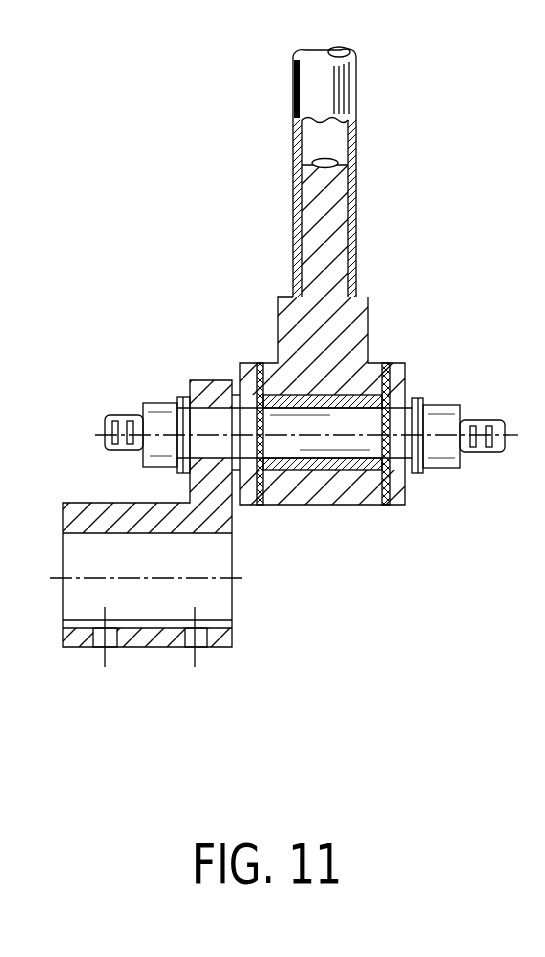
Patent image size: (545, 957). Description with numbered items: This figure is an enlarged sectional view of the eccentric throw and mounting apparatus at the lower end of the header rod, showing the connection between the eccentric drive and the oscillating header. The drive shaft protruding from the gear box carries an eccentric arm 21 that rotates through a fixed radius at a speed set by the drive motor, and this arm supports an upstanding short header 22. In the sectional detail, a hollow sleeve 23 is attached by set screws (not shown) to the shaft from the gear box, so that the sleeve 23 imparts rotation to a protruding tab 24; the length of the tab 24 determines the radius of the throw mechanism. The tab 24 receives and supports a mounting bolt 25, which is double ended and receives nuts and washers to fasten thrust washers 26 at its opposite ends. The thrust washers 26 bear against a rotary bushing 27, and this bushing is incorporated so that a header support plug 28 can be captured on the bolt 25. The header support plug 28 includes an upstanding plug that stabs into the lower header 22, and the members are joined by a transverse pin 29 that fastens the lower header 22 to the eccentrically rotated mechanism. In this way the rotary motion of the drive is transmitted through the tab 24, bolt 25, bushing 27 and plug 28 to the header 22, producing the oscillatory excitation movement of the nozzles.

The eccentric arm 21 is at (143, 403).
The short header 22 is at (360, 93).
The hollow sleeve 23 is at (140, 647).
The protruding tab 24 is at (206, 388).
The mounting bolt 25 is at (320, 422).
The thrust washers 26 is at (237, 362).
The rotary bushing 27 is at (386, 508).
The header support plug 28 is at (326, 490).
The transverse pin 29 is at (327, 248).